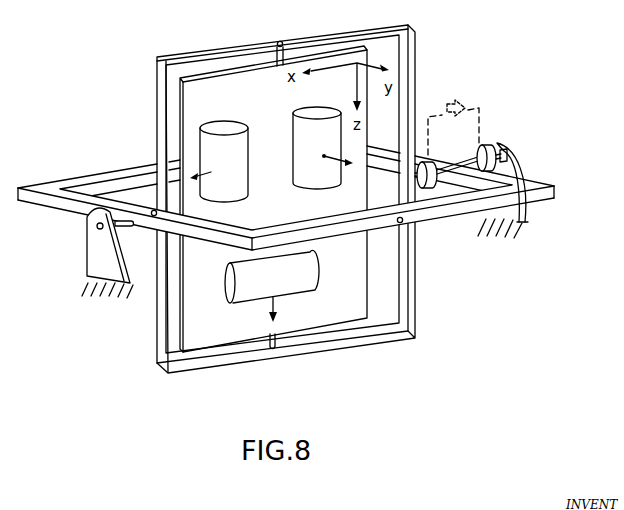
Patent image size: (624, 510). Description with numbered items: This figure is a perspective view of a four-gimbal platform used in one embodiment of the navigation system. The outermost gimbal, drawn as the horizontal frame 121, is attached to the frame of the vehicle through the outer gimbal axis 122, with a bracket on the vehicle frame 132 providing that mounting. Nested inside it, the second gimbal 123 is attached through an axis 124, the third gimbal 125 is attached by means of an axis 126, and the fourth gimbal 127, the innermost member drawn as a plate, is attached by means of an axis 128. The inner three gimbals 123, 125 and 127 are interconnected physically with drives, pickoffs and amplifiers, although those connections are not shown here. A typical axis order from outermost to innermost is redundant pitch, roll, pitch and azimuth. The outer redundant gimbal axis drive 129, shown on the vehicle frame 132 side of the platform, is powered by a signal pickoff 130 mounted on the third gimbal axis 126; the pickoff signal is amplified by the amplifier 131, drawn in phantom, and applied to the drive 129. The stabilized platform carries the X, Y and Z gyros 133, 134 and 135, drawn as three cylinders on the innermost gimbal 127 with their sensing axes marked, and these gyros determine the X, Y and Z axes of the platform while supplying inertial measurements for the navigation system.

The outer horizontal gimbal frame 121 is at (432, 218).
The outer gimbal axis 122 is at (123, 227).
The second gimbal 123 is at (360, 215).
The axis 124 is at (399, 224).
The third gimbal 125 is at (414, 45).
The axis 126 is at (157, 218).
The fourth gimbal 127 is at (205, 87).
The axis 128 is at (286, 56).
The outer redundant gimbal axis drive 129 is at (487, 147).
The signal pickoff 130 is at (430, 167).
The amplifier 131 is at (453, 110).
The vehicle frame 132 is at (527, 220).
The X gyro 133 is at (247, 115).
The Y gyro 134 is at (327, 113).
The Z gyro 135 is at (303, 289).